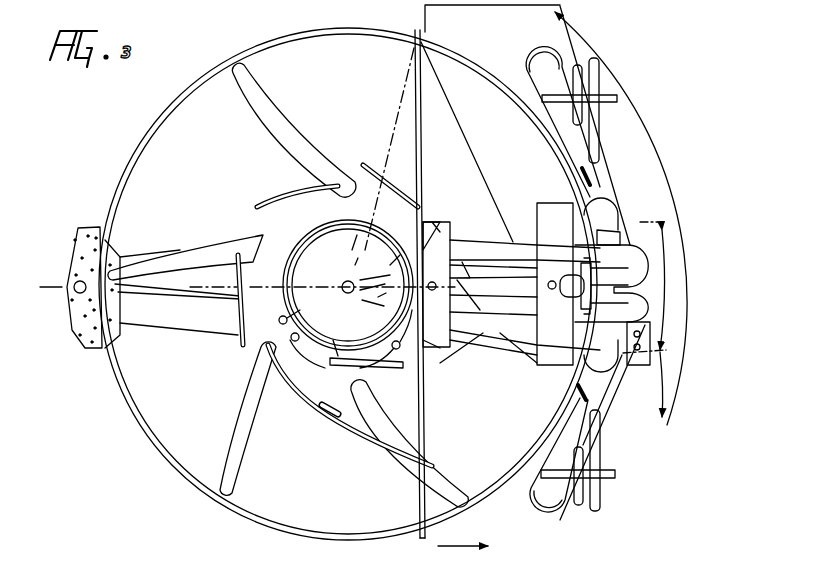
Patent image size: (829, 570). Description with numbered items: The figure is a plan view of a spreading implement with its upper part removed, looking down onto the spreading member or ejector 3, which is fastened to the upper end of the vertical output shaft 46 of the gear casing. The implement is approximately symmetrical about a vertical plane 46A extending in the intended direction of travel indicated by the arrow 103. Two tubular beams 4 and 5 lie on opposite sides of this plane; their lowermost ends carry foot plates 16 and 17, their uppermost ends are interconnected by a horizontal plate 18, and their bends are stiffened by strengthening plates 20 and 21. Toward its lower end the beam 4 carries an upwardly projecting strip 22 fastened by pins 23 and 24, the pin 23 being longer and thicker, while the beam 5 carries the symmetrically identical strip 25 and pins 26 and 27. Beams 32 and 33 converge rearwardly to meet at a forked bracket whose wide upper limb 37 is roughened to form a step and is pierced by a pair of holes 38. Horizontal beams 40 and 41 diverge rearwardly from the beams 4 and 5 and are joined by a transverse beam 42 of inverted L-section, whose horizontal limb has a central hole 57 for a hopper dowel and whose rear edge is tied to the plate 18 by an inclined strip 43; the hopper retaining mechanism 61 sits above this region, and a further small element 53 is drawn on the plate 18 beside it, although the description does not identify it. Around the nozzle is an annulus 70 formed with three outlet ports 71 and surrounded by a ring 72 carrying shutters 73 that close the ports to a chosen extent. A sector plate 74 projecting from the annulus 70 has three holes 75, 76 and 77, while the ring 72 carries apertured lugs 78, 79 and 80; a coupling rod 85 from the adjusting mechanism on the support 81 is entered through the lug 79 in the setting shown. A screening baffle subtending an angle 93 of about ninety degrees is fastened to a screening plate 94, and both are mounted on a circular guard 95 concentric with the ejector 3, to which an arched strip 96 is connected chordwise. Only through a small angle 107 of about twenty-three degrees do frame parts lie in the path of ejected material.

The spreading member or ejector 3 is at (240, 488).
The tubular beam 4 is at (606, 420).
The tubular beam 5 is at (608, 160).
The foot plate 16 is at (533, 518).
The foot plate 17 is at (535, 50).
The horizontal plate 18 is at (556, 203).
The strengthening plate 20 is at (618, 368).
The strengthening plate 21 is at (612, 230).
The upwardly projecting strip 22 is at (616, 474).
The pin 23 is at (602, 500).
The pin 24 is at (580, 505).
The strip 25 is at (617, 98).
The pin 26 is at (600, 70).
The pin 27 is at (579, 60).
The beam 32 is at (172, 322).
The beam 33 is at (156, 250).
The upper limb of forked bracket 37 is at (80, 347).
The pair of holes 38 is at (73, 296).
The horizontal beam 40 is at (483, 334).
The horizontal beam 41 is at (463, 240).
The transverse beam 42 is at (450, 222).
The inclined strip 43 is at (503, 270).
The output shaft 46 is at (342, 284).
The vertical plane of symmetry 46A is at (52, 284).
The pivot 53 is at (552, 290).
The hole 57 is at (439, 298).
The retaining mechanism 61 is at (569, 273).
The annulus 70 is at (355, 226).
The outlet ports 71 is at (381, 290).
The ring 72 is at (320, 233).
The masking plates or shutters 73 is at (436, 284).
The sector plate 74 is at (293, 368).
The hole 75 is at (291, 337).
The hole 76 is at (346, 368).
The hole 77 is at (435, 339).
The apertured lug 78 is at (280, 317).
The apertured lug 79 is at (335, 340).
The apertured lug 80 is at (393, 341).
The support 81 is at (645, 366).
The coupling rod 85 is at (393, 385).
The angle 93 is at (652, 144).
The screening plate 94 is at (468, 62).
The circular guard 95 is at (143, 146).
The arched strip 96 is at (418, 501).
The direction of travel 103 is at (463, 535).
The angle 107 is at (668, 330).